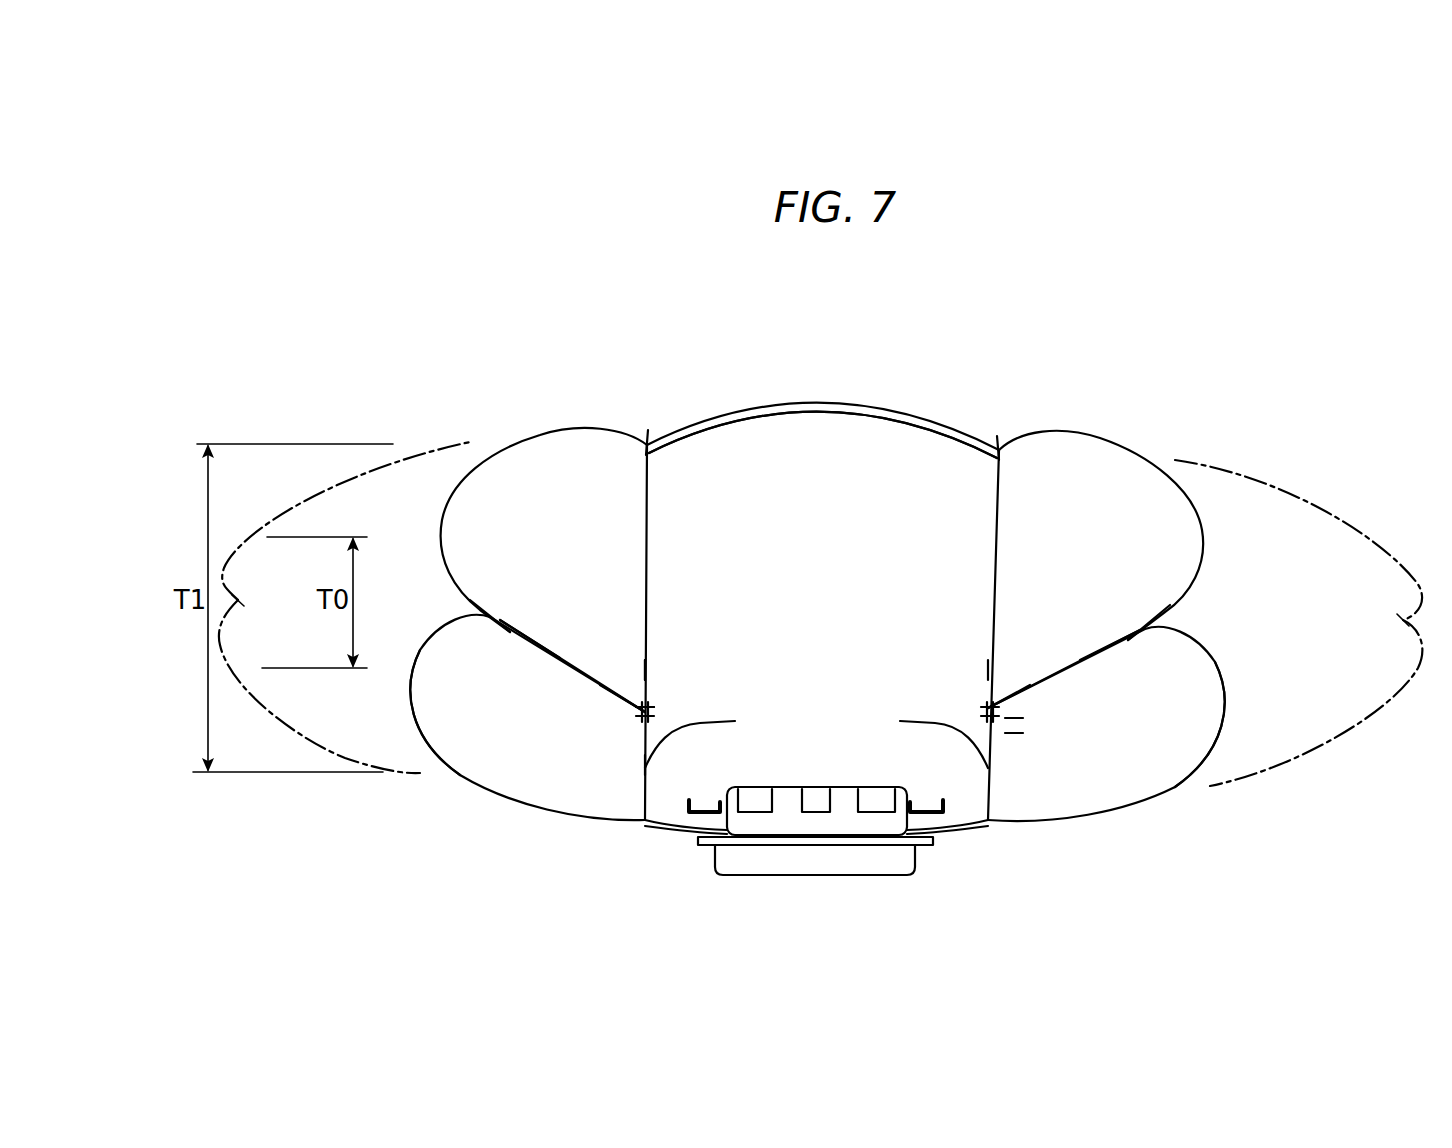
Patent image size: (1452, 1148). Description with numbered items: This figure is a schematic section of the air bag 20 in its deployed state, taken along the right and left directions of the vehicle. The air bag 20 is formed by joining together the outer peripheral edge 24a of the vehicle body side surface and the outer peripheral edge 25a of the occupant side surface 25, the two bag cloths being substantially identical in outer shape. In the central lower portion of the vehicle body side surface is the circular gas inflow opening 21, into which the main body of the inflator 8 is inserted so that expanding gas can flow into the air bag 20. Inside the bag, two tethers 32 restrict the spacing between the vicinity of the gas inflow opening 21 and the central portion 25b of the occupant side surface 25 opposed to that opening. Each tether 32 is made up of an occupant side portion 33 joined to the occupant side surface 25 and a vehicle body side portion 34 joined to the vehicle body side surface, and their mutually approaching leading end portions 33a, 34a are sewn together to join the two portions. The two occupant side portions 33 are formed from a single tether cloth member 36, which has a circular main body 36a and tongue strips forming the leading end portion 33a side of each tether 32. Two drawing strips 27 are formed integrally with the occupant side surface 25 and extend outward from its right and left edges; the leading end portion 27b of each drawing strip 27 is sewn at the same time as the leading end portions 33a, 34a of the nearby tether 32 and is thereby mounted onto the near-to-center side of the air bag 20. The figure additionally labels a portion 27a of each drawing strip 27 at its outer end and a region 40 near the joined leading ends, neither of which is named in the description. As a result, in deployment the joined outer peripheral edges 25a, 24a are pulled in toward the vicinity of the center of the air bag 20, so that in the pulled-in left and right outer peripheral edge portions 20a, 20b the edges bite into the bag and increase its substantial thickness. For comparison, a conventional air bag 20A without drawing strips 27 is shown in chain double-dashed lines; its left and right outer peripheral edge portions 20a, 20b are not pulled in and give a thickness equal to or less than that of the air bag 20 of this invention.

The air bag 20 is at (655, 385).
The conventional air bag 20A is at (327, 793).
The left outer peripheral edge portion 20a is at (292, 727).
The right outer peripheral edge portion 20b is at (1138, 818).
The gas inflow opening 21 is at (752, 828).
The inflator 8 is at (817, 865).
The outer peripheral edge of vehicle body side surface 24a is at (470, 618).
The occupant side surface 25 is at (1067, 434).
The outer peripheral edge of occupant side surface 25a is at (500, 618).
The central portion of occupant side surface 25b is at (848, 405).
The drawing strip 27 is at (555, 657).
The upper end of tether 27a is at (523, 634).
The leading end portion of drawing strip 27b is at (645, 700).
The tether 32 is at (695, 595).
The occupant side portion of tether 33 is at (647, 665).
The leading end portion of occupant side portion 33a is at (647, 718).
The vehicle body side portion of tether 34 is at (735, 721).
The leading end portion of vehicle body side portion 34a is at (645, 750).
The tether cloth member 36 is at (768, 415).
The main body of tether cloth member 36a is at (823, 396).
The sewn portion 40 is at (1012, 720).